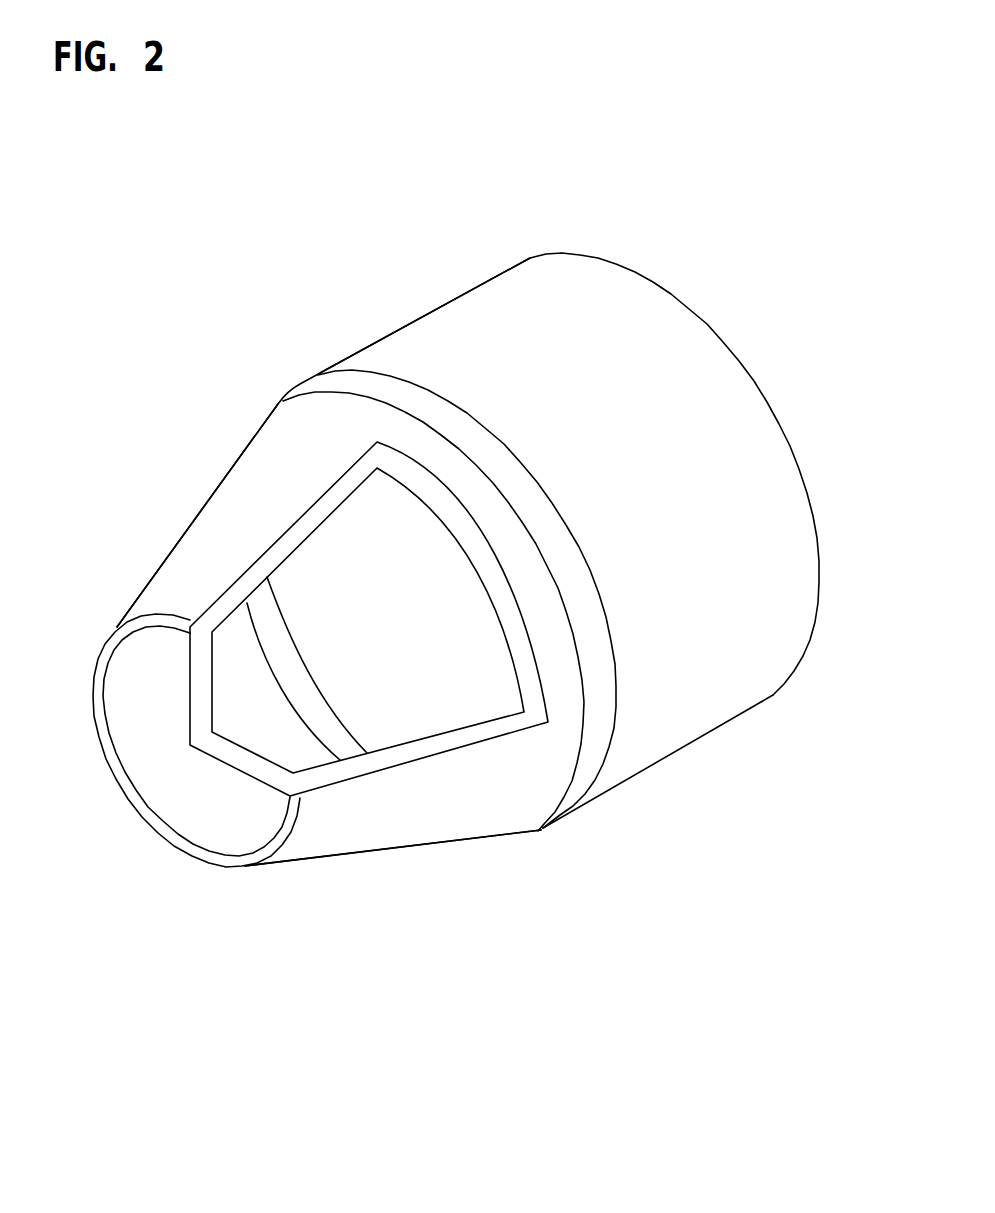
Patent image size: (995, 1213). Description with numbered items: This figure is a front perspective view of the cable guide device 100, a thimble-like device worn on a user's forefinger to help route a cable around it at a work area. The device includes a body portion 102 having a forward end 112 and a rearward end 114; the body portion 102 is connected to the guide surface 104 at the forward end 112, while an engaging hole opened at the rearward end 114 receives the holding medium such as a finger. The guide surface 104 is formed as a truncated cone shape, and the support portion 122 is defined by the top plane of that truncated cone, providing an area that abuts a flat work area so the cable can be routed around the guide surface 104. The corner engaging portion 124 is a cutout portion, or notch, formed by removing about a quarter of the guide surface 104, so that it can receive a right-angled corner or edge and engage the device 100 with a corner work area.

The cable guide device 100 is at (178, 272).
The body portion 102 is at (490, 310).
The guide surface 104 is at (228, 505).
The forward end 112 is at (604, 842).
The rearward end 114 is at (789, 728).
The support portion 122 is at (163, 777).
The corner engaging portion 124 is at (421, 643).